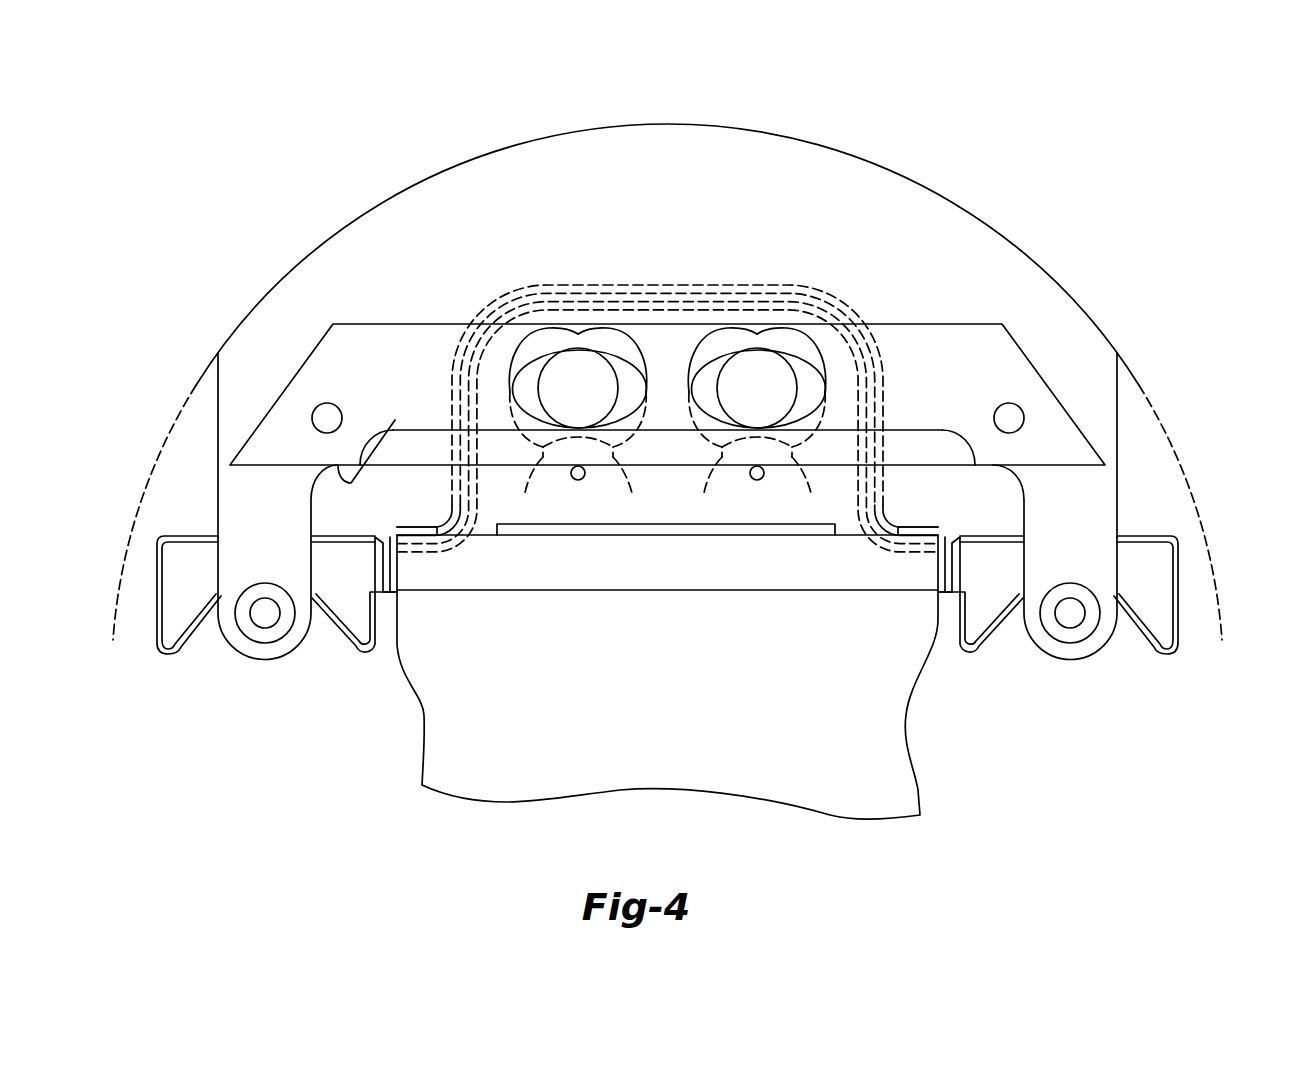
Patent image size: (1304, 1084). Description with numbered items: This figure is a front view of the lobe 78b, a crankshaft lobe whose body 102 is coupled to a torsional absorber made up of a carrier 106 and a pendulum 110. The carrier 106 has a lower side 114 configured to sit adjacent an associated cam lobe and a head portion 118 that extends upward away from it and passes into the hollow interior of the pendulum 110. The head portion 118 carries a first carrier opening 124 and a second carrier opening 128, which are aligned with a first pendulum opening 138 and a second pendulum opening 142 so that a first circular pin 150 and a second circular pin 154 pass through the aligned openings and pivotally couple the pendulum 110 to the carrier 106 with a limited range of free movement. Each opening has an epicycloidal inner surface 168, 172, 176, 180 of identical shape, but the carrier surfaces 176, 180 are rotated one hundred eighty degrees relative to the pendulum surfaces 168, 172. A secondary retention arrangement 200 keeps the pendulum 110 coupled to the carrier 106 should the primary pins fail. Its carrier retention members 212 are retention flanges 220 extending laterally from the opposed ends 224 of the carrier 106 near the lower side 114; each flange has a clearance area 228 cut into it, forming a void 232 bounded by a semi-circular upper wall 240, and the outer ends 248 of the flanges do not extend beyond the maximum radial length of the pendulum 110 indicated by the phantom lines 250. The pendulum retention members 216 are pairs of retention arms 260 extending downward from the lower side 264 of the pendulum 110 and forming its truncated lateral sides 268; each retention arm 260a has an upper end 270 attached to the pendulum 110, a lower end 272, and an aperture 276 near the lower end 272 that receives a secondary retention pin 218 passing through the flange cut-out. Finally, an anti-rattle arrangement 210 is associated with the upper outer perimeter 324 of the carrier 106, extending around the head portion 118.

The lobe 78b is at (425, 793).
The body 102 is at (893, 797).
The carrier 106 is at (493, 500).
The pendulum 110 is at (880, 165).
The lower side 114 is at (760, 593).
The head portion 118 is at (668, 508).
The first carrier opening 124 is at (758, 434).
The second carrier opening 128 is at (577, 434).
The first pendulum opening 138 is at (797, 329).
The second pendulum opening 142 is at (540, 329).
The first circular pin 150 is at (758, 377).
The second circular pin 154 is at (580, 377).
The inner surface 168 is at (724, 329).
The inner surface 172 is at (610, 329).
The inner surface 176 is at (722, 492).
The inner surface 180 is at (607, 492).
The secondary retention arrangement 200 is at (240, 665).
The anti-rattle arrangement 210 is at (465, 309).
The carrier retention members 212 is at (178, 598).
The pendulum retention members 216 is at (203, 524).
The secondary retention pin 218 is at (266, 613).
The retention flange 220 is at (173, 620).
The opposed end of carrier 224 is at (396, 528).
The clearance area 228 is at (329, 648).
The void 232 is at (186, 648).
The upper wall 240 is at (200, 622).
The outer end 248 is at (157, 568).
The phantom lines 250 is at (115, 640).
The pair of retention arms 260 is at (205, 533).
The retention arm 260a is at (280, 530).
The lower side of pendulum 264 is at (395, 420).
The truncated lateral side 268 is at (218, 407).
The upper end 270 is at (200, 505).
The lower end 272 is at (289, 660).
The aperture 276 is at (258, 590).
The upper outer perimeter 324 is at (503, 300).